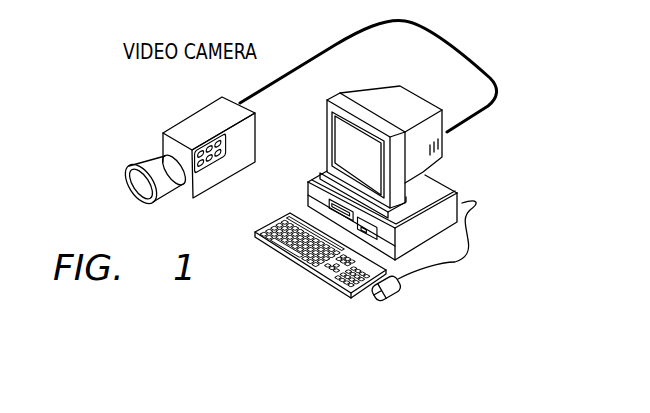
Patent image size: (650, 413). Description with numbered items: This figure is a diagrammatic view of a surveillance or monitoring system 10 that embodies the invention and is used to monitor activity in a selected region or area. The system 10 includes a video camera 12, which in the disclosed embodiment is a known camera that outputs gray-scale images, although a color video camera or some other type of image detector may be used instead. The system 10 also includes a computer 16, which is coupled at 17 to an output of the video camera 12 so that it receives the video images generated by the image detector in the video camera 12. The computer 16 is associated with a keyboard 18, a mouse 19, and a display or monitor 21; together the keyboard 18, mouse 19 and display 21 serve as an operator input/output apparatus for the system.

The monitoring system 10 is at (502, 50).
The video camera 12 is at (196, 122).
The computer 16 is at (462, 199).
The coupling 17 is at (330, 44).
The keyboard 18 is at (302, 267).
The mouse 19 is at (388, 292).
The display 21 is at (392, 98).